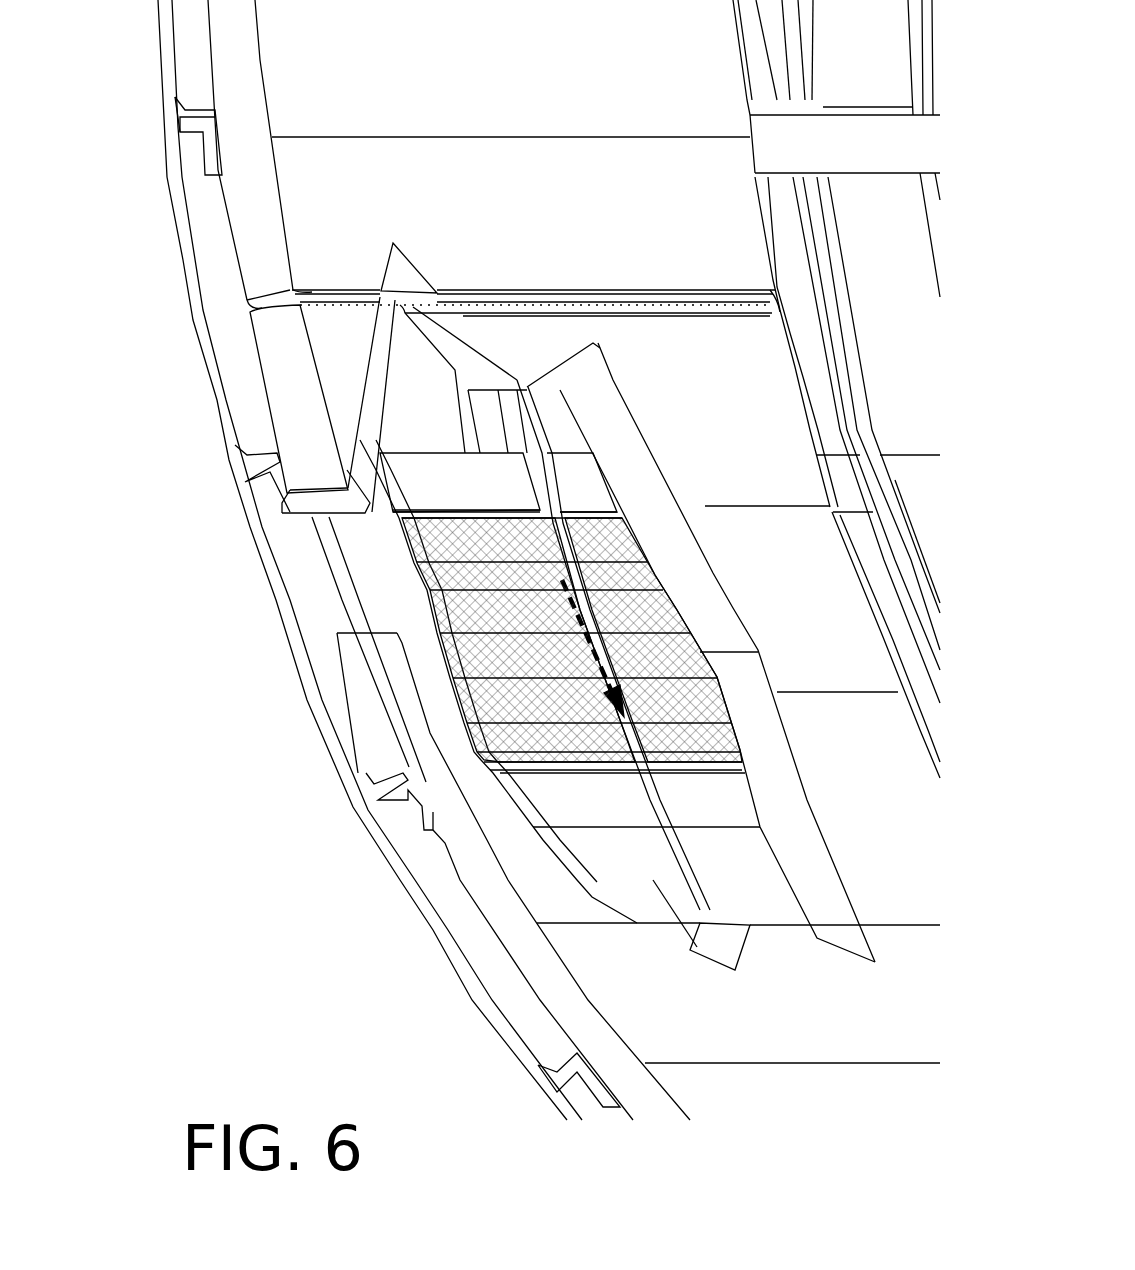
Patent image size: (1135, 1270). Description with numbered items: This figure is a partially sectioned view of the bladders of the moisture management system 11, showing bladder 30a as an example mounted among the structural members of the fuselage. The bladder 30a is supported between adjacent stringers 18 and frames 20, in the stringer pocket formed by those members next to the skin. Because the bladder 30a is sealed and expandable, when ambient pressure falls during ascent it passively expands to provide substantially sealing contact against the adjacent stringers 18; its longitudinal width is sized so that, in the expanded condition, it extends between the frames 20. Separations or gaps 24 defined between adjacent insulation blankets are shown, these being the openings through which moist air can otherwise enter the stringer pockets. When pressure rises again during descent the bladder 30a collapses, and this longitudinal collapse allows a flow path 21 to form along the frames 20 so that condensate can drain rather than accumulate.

The moisture management system 11 is at (288, 586).
The stringers 18 is at (450, 488).
The frames 20 is at (527, 425).
The flow path 21 is at (577, 650).
The separations or gaps 24 is at (718, 450).
The bladder 30a is at (495, 608).